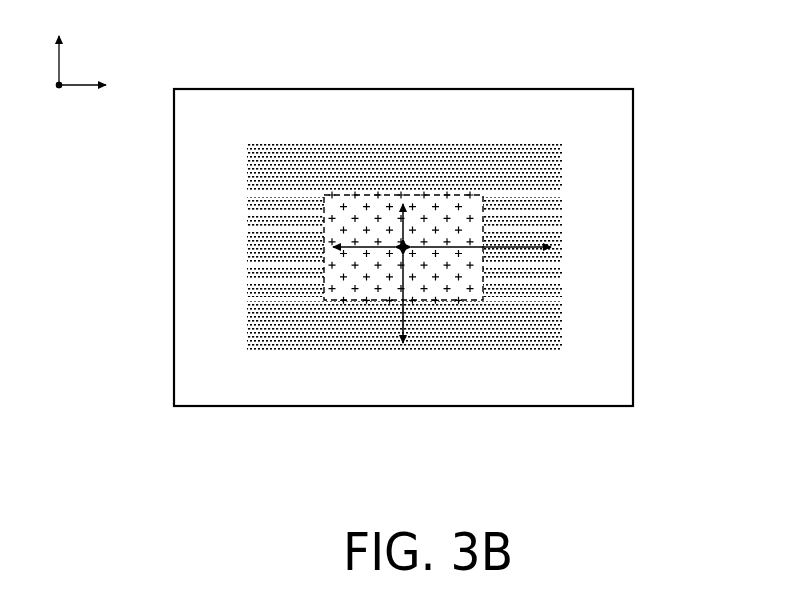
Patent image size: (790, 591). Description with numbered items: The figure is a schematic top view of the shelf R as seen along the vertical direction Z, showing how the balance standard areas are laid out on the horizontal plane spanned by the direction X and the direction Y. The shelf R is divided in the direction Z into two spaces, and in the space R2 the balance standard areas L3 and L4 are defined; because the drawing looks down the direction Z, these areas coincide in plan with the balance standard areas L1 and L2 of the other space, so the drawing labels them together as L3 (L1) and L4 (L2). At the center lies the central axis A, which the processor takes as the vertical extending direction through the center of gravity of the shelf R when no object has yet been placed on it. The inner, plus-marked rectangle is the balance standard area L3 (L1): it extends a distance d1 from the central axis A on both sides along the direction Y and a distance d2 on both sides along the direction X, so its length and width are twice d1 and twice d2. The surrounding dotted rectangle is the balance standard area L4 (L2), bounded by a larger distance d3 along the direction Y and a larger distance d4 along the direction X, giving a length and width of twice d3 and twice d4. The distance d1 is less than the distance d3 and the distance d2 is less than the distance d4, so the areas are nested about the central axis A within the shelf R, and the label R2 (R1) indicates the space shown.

The central axis A is at (403, 247).
The shelf R is at (646, 69).
The space R2 is at (480, 327).
The balance standard area L1 is at (468, 300).
The balance standard area L2 is at (263, 353).
The balance standard area L3 is at (420, 334).
The balance standard area L4 is at (399, 308).
The distance d1 is at (364, 232).
The distance d2 is at (420, 221).
The distance d3 is at (481, 233).
The distance d4 is at (418, 299).
The direction X is at (60, 42).
The direction Y is at (96, 84).
The direction Z is at (60, 107).